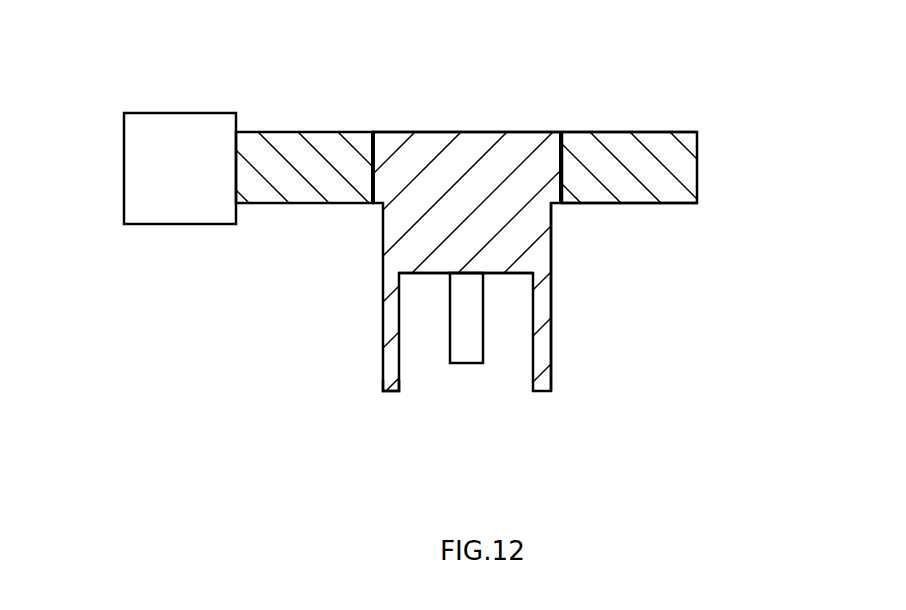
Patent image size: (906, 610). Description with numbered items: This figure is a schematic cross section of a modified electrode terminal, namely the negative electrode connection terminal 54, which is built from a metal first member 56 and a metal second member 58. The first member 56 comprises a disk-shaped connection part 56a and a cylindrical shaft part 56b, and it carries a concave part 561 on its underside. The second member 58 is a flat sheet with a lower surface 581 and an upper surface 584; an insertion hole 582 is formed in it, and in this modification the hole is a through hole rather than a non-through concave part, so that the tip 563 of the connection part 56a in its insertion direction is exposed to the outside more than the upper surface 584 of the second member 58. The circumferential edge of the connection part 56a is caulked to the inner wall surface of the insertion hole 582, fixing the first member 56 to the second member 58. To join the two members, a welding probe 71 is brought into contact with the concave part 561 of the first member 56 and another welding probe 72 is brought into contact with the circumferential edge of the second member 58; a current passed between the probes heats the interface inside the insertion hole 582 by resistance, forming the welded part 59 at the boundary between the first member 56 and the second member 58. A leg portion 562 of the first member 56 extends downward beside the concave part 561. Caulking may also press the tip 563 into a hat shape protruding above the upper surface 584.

The welding probe 72 is at (124, 178).
The negative electrode connection terminal 54 is at (316, 128).
The welded part 59 is at (373, 182).
The first member 56 is at (660, 248).
The tip 563 is at (422, 132).
The connection part 56a is at (553, 208).
The shaft part 56b is at (546, 296).
The concave part 561 is at (507, 273).
The leg portion of housing body 562 is at (390, 392).
The insertion hole 582 is at (562, 170).
The second member 58 is at (698, 147).
The upper surface 584 is at (655, 131).
The lower surface 581 is at (680, 205).
The welding probe 71 is at (463, 365).